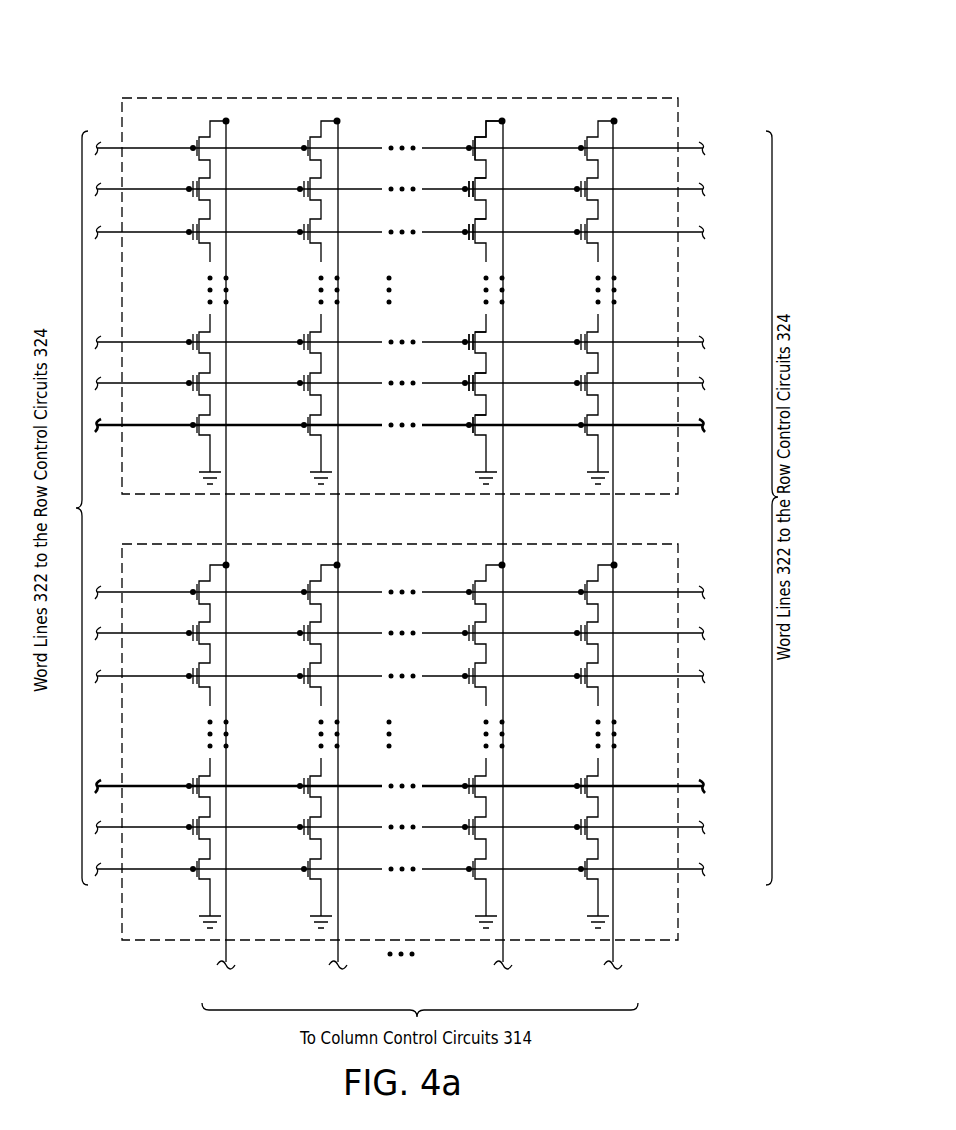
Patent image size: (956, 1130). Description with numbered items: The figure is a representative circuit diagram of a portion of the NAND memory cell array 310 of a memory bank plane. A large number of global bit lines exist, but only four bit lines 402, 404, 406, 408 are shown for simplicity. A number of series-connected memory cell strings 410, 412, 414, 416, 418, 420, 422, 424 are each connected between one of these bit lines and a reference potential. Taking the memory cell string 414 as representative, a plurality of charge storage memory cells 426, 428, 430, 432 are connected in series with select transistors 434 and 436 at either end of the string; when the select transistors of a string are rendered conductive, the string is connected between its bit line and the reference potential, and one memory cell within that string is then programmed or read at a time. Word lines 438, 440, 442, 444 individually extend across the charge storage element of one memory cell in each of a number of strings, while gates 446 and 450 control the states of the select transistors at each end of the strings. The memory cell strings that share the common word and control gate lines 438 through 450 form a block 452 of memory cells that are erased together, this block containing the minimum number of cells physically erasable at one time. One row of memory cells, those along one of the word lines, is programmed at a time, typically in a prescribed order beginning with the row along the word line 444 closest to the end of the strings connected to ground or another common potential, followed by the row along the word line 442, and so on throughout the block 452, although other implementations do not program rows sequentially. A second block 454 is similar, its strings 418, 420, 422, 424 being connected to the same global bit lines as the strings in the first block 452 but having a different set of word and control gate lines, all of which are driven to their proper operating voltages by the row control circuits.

The memory cell array 310 is at (374, 503).
The global bit line 402 is at (226, 134).
The global bit line 404 is at (338, 137).
The global bit line 406 is at (503, 137).
The global bit line 408 is at (613, 137).
The memory cell string 410 is at (195, 317).
The memory cell string 412 is at (306, 317).
The memory cell string 414 is at (470, 317).
The memory cell string 416 is at (583, 317).
The memory cell string 418 is at (195, 762).
The memory cell string 420 is at (306, 762).
The memory cell string 422 is at (470, 762).
The memory cell string 424 is at (583, 762).
The charge storage memory cell 426 is at (467, 181).
The charge storage memory cell 428 is at (467, 224).
The charge storage memory cell 430 is at (468, 334).
The charge storage memory cell 432 is at (468, 375).
The select transistor 434 is at (470, 417).
The select transistor 436 is at (475, 137).
The word line 438 is at (688, 182).
The word line 440 is at (688, 223).
The word line 442 is at (688, 335).
The word line 444 is at (688, 376).
The control gate line 446 is at (688, 141).
The control gate line 450 is at (688, 418).
The block 452 is at (377, 92).
The second block 454 is at (482, 947).